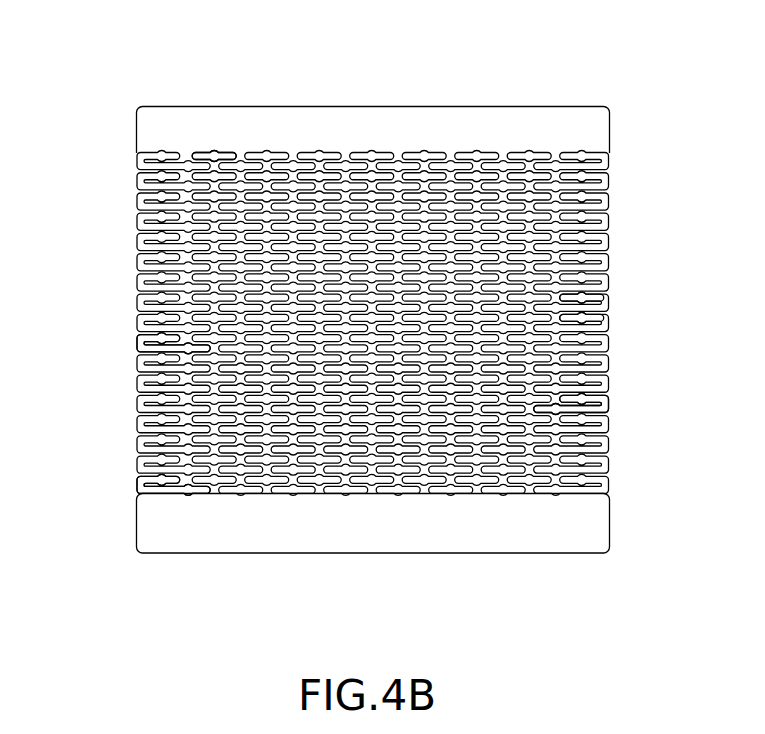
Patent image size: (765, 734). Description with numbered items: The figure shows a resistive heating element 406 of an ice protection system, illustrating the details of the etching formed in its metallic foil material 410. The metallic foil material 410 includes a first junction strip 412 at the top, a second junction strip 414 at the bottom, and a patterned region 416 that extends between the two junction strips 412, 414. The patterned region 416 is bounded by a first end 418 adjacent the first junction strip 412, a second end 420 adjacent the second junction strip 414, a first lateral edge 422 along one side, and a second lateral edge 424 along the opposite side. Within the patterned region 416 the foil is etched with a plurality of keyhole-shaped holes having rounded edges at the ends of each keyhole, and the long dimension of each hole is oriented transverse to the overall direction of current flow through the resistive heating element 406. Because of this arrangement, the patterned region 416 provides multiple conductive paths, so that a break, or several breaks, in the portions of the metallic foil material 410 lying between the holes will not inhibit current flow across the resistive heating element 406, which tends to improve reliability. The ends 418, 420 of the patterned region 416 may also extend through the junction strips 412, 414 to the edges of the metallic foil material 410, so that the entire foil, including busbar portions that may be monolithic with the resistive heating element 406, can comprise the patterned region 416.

The resistive heating element 406 is at (50, 51).
The metallic foil material 410 is at (362, 142).
The first junction strip 412 is at (580, 130).
The second junction strip 414 is at (590, 531).
The patterned region 416 is at (612, 213).
The first end 418 is at (204, 150).
The second end 420 is at (187, 498).
The first lateral edge 422 is at (136, 336).
The second lateral edge 424 is at (586, 298).